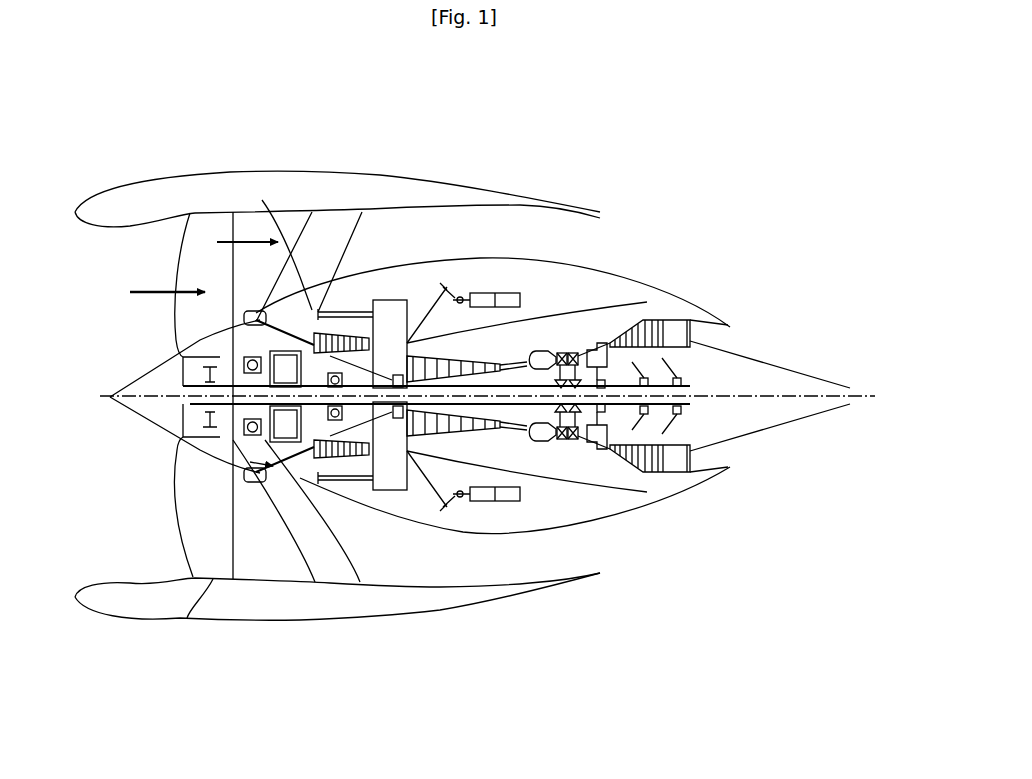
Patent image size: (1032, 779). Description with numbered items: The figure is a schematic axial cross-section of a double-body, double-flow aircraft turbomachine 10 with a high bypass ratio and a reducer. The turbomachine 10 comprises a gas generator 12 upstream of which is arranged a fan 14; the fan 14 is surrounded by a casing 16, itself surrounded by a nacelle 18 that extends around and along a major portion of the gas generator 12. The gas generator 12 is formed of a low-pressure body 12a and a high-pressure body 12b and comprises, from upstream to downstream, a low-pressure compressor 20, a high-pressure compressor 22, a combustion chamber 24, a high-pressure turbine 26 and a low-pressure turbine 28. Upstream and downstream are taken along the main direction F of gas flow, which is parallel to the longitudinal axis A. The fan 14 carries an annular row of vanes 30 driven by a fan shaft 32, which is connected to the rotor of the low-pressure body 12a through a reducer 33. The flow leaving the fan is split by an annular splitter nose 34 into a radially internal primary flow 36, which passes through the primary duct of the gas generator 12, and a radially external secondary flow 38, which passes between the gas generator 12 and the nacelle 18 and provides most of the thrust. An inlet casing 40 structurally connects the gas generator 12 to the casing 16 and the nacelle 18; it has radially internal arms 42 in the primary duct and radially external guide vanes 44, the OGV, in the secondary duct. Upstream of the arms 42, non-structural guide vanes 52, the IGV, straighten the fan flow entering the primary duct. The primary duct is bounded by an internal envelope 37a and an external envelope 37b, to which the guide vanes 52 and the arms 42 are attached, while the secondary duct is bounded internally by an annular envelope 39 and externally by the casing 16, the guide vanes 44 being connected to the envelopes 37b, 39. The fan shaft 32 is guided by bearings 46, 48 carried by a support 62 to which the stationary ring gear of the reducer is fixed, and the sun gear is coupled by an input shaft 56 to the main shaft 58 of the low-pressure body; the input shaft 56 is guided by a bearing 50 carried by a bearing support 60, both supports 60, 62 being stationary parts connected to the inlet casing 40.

The turbomachine 10 is at (722, 201).
The gas generator 12 is at (401, 284).
The low-pressure body 12a is at (347, 455).
The high-pressure body 12b is at (520, 450).
The fan 14 is at (172, 550).
The casing 16 is at (187, 618).
The nacelle 18 is at (152, 192).
The low-pressure compressor 20 is at (400, 492).
The high-pressure compressor 22 is at (455, 445).
The combustion chamber 24 is at (543, 352).
The high-pressure turbine 26 is at (570, 355).
The low-pressure turbine 28 is at (645, 322).
The vanes 30 is at (213, 223).
The fan shaft 32 is at (152, 360).
The reducer 33 is at (280, 485).
The annular splitter nose 34 is at (300, 478).
The primary flow 36 is at (270, 484).
The internal annular envelope 37a is at (302, 447).
The external annular envelope 37b is at (298, 283).
The secondary flow 38 is at (235, 245).
The annular envelope 39 is at (455, 292).
The inlet casing 40 is at (248, 240).
The radially internal arms 42 is at (337, 467).
The radially external guide vanes 44 is at (360, 210).
The bearing 46 is at (187, 415).
The bearing 48 is at (187, 440).
The bearing 50 is at (367, 482).
The guide vanes 52 is at (248, 318).
The input shaft 56 is at (263, 315).
The main shaft 58 is at (478, 292).
The bearing support 60 is at (310, 312).
The support 62 is at (240, 470).
The main direction of flow F is at (155, 290).
The longitudinal axis A is at (798, 398).